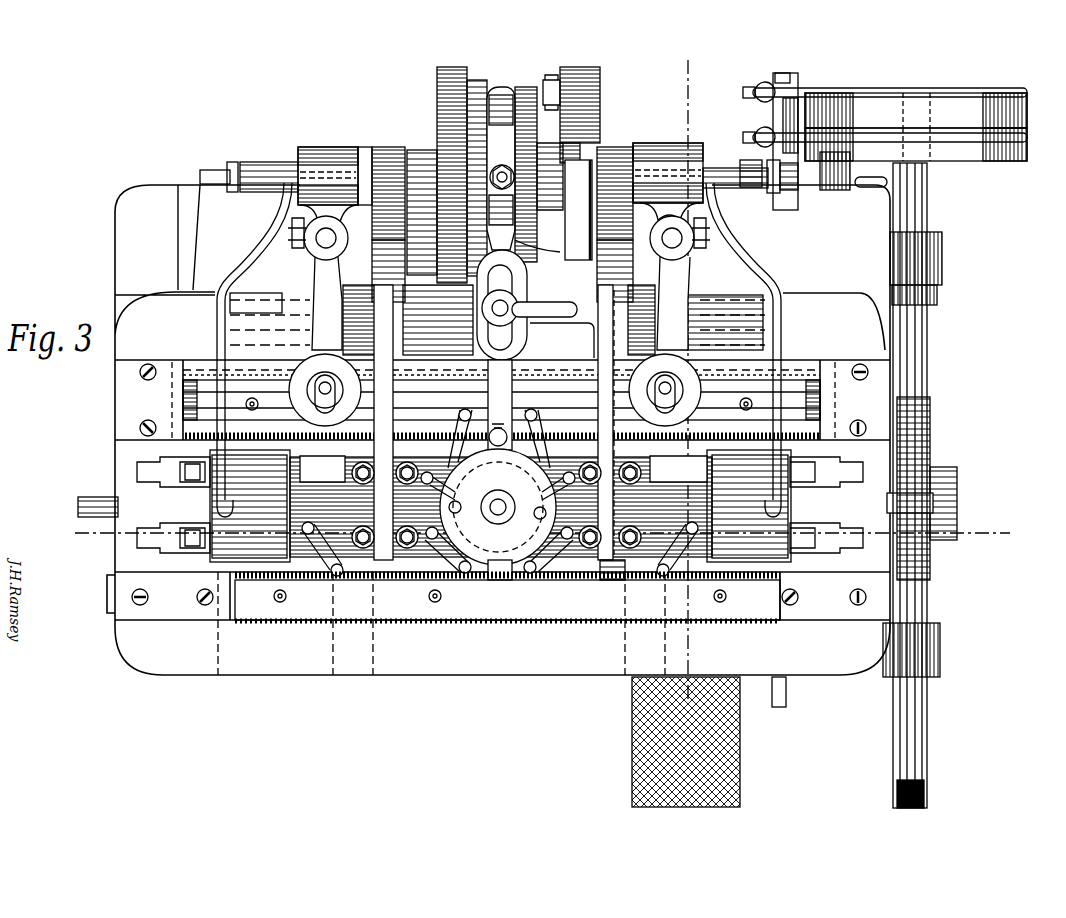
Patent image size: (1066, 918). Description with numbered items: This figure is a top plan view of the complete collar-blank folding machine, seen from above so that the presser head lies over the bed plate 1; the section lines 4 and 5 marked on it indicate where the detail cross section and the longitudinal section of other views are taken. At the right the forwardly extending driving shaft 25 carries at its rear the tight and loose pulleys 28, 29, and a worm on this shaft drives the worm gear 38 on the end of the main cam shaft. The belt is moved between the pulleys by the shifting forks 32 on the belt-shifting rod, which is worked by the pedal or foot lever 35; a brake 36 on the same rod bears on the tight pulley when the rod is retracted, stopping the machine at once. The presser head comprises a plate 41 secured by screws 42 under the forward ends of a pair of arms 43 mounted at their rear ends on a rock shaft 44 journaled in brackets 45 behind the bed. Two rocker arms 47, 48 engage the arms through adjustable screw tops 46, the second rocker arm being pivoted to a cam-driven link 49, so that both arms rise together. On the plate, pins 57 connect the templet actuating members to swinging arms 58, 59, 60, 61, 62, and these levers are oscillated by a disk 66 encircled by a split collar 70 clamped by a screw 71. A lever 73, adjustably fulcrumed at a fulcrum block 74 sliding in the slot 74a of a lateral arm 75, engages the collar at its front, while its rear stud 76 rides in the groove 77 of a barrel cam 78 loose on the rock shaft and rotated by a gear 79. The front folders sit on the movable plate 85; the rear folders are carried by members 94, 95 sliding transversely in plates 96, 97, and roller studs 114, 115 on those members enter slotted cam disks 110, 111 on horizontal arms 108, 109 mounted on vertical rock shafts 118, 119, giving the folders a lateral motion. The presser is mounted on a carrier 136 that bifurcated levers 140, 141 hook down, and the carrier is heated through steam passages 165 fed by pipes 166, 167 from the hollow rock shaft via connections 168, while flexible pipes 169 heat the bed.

The bed plate 1 is at (498, 446).
The section line 4— 4 is at (701, 378).
The section line 5— 5 is at (531, 533).
The driving shaft 25 is at (930, 350).
The tight pulley 28 is at (927, 144).
The loose pulley 29 is at (927, 110).
The shifting forks 32 is at (860, 130).
The pedal or foot lever 35 is at (742, 760).
The brake 36 is at (850, 180).
The worm gear 38 is at (932, 420).
The plate 41 is at (737, 590).
The screws 42 is at (592, 578).
The arms 43 is at (618, 147).
The rock shaft 44 is at (262, 150).
The brackets 45 is at (668, 120).
The adjustable screw tops 46 is at (660, 210).
The rocker arm 47 is at (414, 150).
The rocker arm 48 is at (578, 67).
The link 49 is at (600, 118).
The pins 57 is at (500, 596).
The swinging arm 58 is at (320, 578).
The swinging arm 59 is at (515, 580).
The swinging arm 60 is at (624, 582).
The swinging arm 61 is at (496, 422).
The swinging arm 62 is at (499, 450).
The disk 66 is at (498, 470).
The split collar 70 is at (498, 565).
The screw 71 is at (508, 560).
The lever 73 is at (524, 168).
The fulcrum block 74 is at (510, 275).
The slot 74a is at (520, 268).
The arm 75 is at (575, 330).
The stud 76 is at (502, 165).
The groove 77 is at (492, 90).
The barrel cam 78 is at (470, 75).
The gear 79 is at (440, 74).
The plate 85 is at (262, 612).
The member 94 is at (190, 400).
The member 95 is at (812, 400).
The plate 96 is at (188, 368).
The plate 97 is at (815, 372).
The horizontal arm 108 is at (322, 312).
The horizontal arm 109 is at (695, 306).
The slotted cam disk 110 is at (312, 372).
The slotted cam disk 111 is at (685, 372).
The roller stud 114 is at (266, 404).
The roller stud 115 is at (731, 404).
The vertical rock shaft 118 is at (320, 245).
The vertical rock shaft 119 is at (705, 222).
The carrier 136 is at (780, 558).
The bifurcated lever 140 is at (182, 556).
The bifurcated lever 141 is at (832, 462).
The steam passages 165 is at (795, 515).
The pipe 166 is at (217, 330).
The pipe 167 is at (800, 328).
The connections 168 is at (795, 190).
The flexible pipes 169 is at (933, 503).